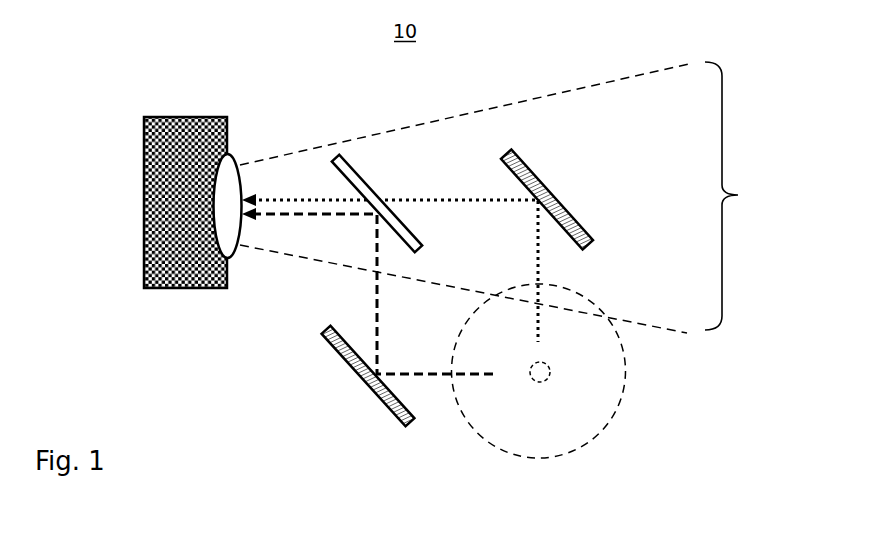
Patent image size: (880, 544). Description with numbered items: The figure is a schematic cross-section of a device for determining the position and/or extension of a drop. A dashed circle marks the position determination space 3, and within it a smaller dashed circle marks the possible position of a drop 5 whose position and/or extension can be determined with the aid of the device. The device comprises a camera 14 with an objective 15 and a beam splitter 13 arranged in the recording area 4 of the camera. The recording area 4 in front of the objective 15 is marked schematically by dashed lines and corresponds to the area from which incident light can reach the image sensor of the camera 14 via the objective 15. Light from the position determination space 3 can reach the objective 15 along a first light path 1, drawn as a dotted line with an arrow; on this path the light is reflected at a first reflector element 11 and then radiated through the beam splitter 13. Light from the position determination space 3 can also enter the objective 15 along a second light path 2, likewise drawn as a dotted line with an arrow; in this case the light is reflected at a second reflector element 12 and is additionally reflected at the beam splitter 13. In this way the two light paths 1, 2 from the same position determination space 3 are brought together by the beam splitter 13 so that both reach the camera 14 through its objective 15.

The first light path 1 is at (446, 199).
The second light path 2 is at (375, 300).
The position determination space 3 is at (626, 365).
The recording area 4 is at (501, 197).
The drop 5 is at (522, 391).
The first reflector element 11 is at (518, 156).
The second reflector element 12 is at (335, 347).
The beam splitter 13 is at (356, 170).
The camera 14 is at (170, 289).
The objective 15 is at (240, 155).